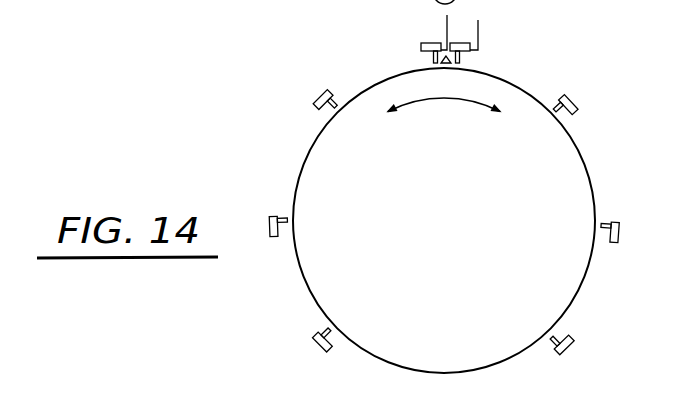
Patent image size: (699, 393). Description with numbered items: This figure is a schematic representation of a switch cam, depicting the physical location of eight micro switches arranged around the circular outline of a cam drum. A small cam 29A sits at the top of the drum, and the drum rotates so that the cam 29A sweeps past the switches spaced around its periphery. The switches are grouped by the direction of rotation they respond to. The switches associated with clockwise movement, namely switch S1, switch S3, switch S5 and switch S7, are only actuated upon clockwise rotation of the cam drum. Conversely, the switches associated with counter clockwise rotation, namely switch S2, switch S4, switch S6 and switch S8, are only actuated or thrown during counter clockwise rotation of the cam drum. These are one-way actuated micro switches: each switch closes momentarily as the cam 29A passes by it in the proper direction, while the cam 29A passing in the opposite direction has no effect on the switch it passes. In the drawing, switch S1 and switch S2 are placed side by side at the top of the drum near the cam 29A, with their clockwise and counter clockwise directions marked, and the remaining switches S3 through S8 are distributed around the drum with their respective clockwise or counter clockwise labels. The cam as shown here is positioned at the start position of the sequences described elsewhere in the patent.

The cam 29A is at (446, 62).
The micro switch S1 is at (477, 41).
The micro switch S2 is at (417, 39).
The micro switch S3 is at (579, 108).
The micro switch S4 is at (308, 103).
The micro switch S5 is at (623, 232).
The micro switch S6 is at (261, 226).
The micro switch S7 is at (313, 350).
The micro switch S8 is at (572, 354).